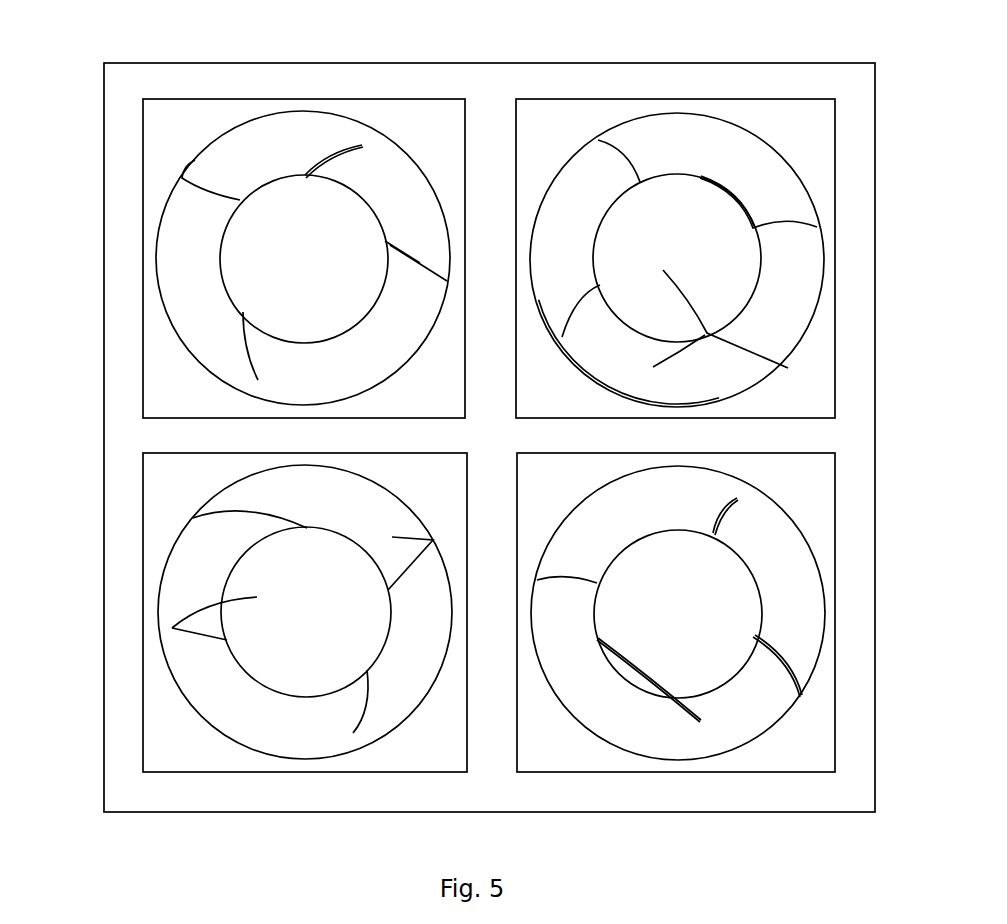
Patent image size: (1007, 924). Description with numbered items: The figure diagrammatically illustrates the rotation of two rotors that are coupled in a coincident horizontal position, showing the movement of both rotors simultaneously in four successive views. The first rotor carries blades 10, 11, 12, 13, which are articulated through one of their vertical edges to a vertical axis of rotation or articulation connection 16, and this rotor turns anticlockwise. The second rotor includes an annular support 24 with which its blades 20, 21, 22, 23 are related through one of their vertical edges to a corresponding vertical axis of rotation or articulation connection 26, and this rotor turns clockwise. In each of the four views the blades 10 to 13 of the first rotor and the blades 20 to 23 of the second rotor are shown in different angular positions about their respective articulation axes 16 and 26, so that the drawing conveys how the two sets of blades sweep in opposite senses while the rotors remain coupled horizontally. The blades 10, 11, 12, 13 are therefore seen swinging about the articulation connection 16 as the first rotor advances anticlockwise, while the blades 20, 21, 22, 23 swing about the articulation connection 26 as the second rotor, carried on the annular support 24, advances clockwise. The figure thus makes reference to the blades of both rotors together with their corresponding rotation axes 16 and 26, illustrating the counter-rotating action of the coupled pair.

The blade 10 is at (390, 245).
The blade 11 is at (335, 150).
The blade 12 is at (230, 224).
The blade 13 is at (260, 328).
The vertical axis of rotation or articulation connection 16 is at (304, 175).
The blade 20 is at (733, 193).
The blade 21 is at (345, 187).
The blade 22 is at (195, 160).
The blade 23 is at (248, 353).
The annular support 24 is at (385, 297).
The vertical axis of rotation or articulation connection 26 is at (242, 200).